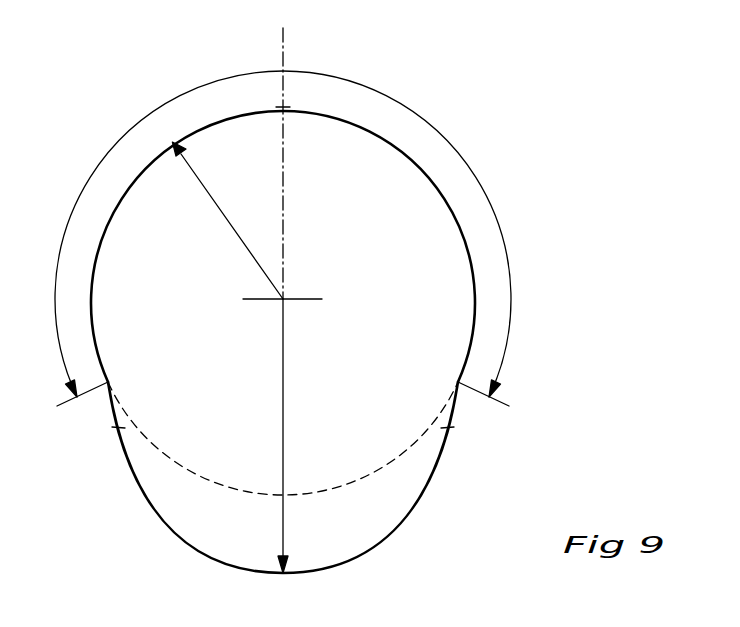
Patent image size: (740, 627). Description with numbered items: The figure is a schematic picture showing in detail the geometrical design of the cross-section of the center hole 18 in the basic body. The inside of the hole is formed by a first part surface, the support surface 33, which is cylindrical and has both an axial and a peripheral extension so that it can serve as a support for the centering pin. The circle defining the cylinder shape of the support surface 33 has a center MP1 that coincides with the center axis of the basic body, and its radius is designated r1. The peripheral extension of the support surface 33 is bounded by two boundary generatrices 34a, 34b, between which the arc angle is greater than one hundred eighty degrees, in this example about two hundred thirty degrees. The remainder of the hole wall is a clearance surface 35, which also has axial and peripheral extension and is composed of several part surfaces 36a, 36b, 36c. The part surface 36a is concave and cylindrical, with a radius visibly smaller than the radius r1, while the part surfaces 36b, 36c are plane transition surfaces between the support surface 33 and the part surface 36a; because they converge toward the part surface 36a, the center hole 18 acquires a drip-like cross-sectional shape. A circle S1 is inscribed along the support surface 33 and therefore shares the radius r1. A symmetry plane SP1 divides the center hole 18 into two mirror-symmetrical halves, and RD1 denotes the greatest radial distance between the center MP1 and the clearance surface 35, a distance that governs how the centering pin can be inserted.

The center hole 18 is at (413, 181).
The support surface 33 is at (292, 108).
The boundary generatrix 34a is at (110, 380).
The boundary generatrix 34b is at (456, 380).
The clearance surface 35 is at (388, 533).
The part surface 36a is at (323, 563).
The part surface 36b is at (117, 410).
The part surface 36c is at (449, 410).
The inscribed circle S1 is at (231, 483).
The symmetry plane SP1 is at (282, 47).
The center MP1 is at (284, 299).
The greatest radial distance RD1 is at (284, 441).
The radius r1 is at (222, 215).